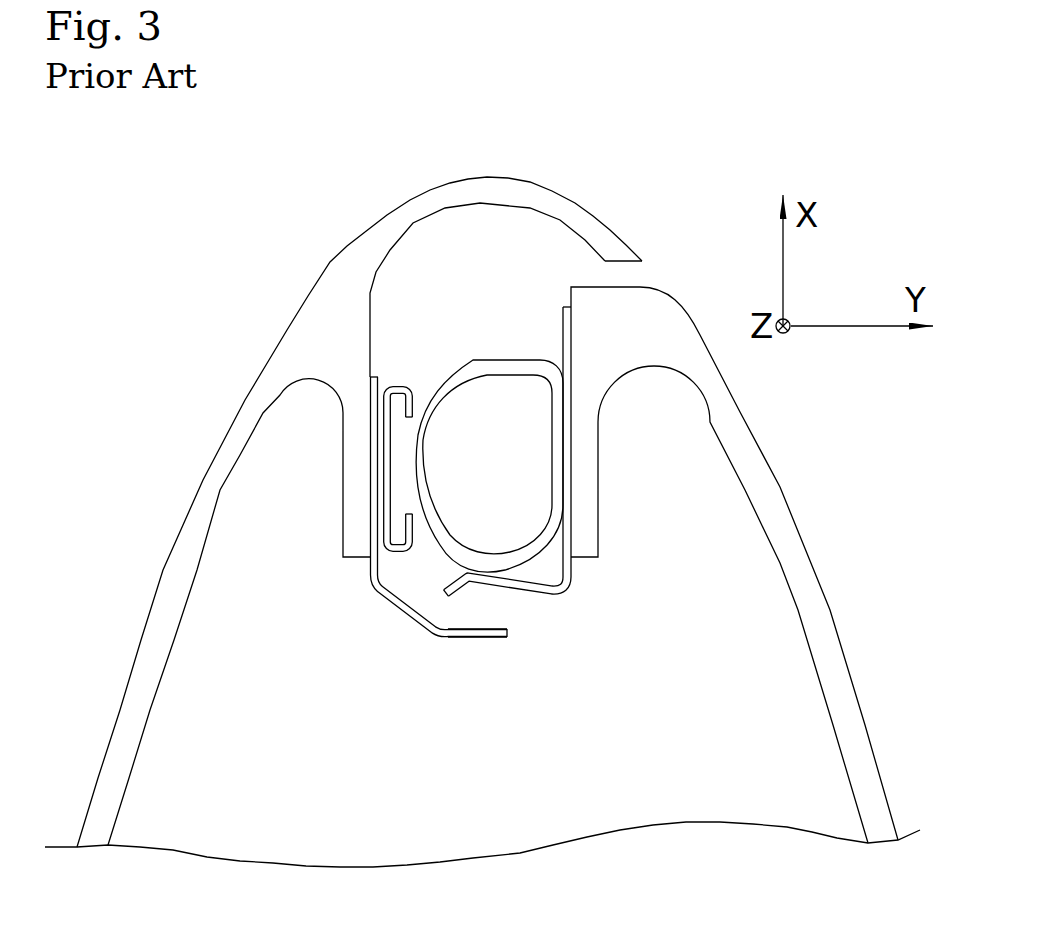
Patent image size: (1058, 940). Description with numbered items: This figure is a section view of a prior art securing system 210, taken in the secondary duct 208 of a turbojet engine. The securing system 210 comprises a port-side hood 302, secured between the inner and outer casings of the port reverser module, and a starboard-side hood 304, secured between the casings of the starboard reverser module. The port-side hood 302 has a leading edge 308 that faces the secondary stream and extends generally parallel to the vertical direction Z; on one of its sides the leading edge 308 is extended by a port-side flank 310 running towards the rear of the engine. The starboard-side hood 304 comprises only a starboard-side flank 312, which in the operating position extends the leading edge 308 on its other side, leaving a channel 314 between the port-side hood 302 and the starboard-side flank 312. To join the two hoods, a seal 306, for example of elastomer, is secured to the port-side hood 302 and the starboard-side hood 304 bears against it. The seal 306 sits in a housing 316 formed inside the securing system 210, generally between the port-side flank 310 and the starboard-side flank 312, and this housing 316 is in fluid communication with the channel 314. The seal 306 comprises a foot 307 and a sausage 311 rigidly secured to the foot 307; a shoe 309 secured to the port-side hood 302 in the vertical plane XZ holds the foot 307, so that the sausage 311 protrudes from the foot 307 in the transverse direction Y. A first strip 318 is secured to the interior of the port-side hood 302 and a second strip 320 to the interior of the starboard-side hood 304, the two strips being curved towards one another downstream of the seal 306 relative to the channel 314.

The secondary duct 208 is at (893, 397).
The securing system 210 is at (217, 243).
The port-side hood 302 is at (215, 360).
The starboard-side hood 304 is at (810, 497).
The seal 306 is at (467, 531).
The foot 307 is at (397, 530).
The leading edge 308 is at (490, 177).
The shoe 309 is at (382, 513).
The port-side flank 310 is at (202, 512).
The sausage 311 is at (470, 372).
The starboard-side flank 312 is at (807, 590).
The channel 314 is at (625, 272).
The housing 316 is at (487, 292).
The first strip 318 is at (463, 633).
The second strip 320 is at (567, 591).